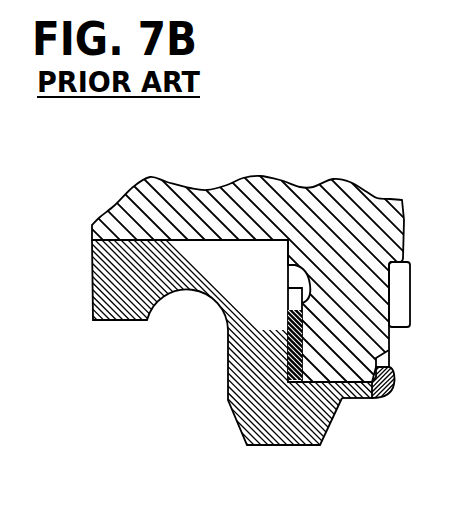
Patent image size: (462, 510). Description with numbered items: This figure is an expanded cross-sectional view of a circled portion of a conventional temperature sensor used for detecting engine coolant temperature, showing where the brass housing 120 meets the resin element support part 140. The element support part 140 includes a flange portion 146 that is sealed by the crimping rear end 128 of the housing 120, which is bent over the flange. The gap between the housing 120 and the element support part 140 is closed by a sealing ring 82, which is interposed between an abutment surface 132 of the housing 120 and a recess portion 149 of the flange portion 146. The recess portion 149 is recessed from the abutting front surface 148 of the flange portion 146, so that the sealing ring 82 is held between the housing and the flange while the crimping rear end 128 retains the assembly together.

The housing 120 is at (142, 240).
The element support part 140 is at (377, 198).
The abutting front surface 148 is at (288, 262).
The abutment surface 132 is at (288, 310).
The recess portion 149 is at (288, 335).
The sealing ring 82 is at (317, 408).
The crimping rear end 128 is at (394, 386).
The flange portion 146 is at (367, 398).